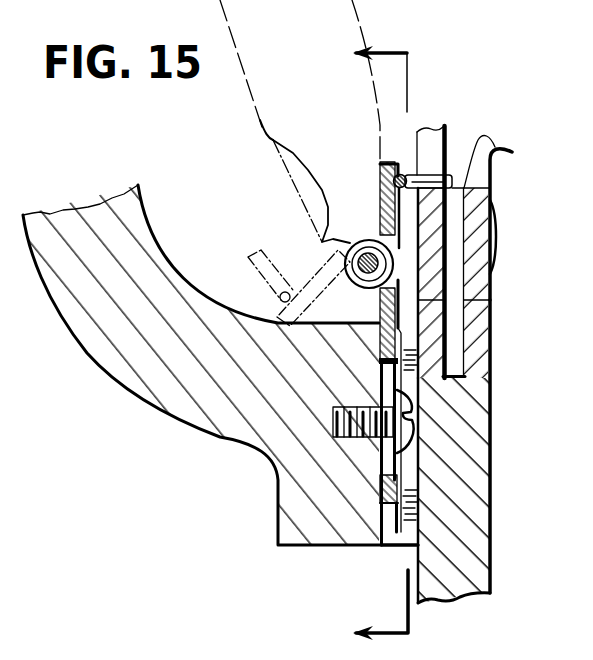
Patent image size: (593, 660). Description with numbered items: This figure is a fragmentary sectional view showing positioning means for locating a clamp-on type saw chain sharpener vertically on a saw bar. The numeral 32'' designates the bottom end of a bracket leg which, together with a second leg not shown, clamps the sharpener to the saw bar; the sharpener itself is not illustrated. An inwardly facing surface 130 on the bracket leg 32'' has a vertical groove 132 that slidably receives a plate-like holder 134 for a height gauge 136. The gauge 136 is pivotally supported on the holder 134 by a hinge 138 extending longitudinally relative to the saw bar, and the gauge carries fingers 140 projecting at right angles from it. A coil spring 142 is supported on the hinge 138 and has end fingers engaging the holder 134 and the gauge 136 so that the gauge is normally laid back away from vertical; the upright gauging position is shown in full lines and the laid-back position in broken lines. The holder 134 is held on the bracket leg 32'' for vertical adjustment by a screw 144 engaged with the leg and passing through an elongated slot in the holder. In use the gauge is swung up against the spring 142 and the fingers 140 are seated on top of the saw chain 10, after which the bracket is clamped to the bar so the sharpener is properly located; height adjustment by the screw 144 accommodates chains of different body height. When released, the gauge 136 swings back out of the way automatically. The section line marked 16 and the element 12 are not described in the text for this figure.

The saw chain 10 is at (491, 202).
The base 12 is at (492, 577).
The section line 16- 16 is at (380, 341).
The bracket leg 32'' is at (220, 365).
The inwardly facing surface 130 is at (418, 470).
The vertical groove 132 is at (402, 531).
The plate-like holder 134 is at (380, 507).
The height gauge 136 is at (386, 163).
The hinge 138 is at (356, 282).
The fingers 140 is at (451, 176).
The coil spring 142 is at (352, 247).
The screw 144 is at (418, 407).